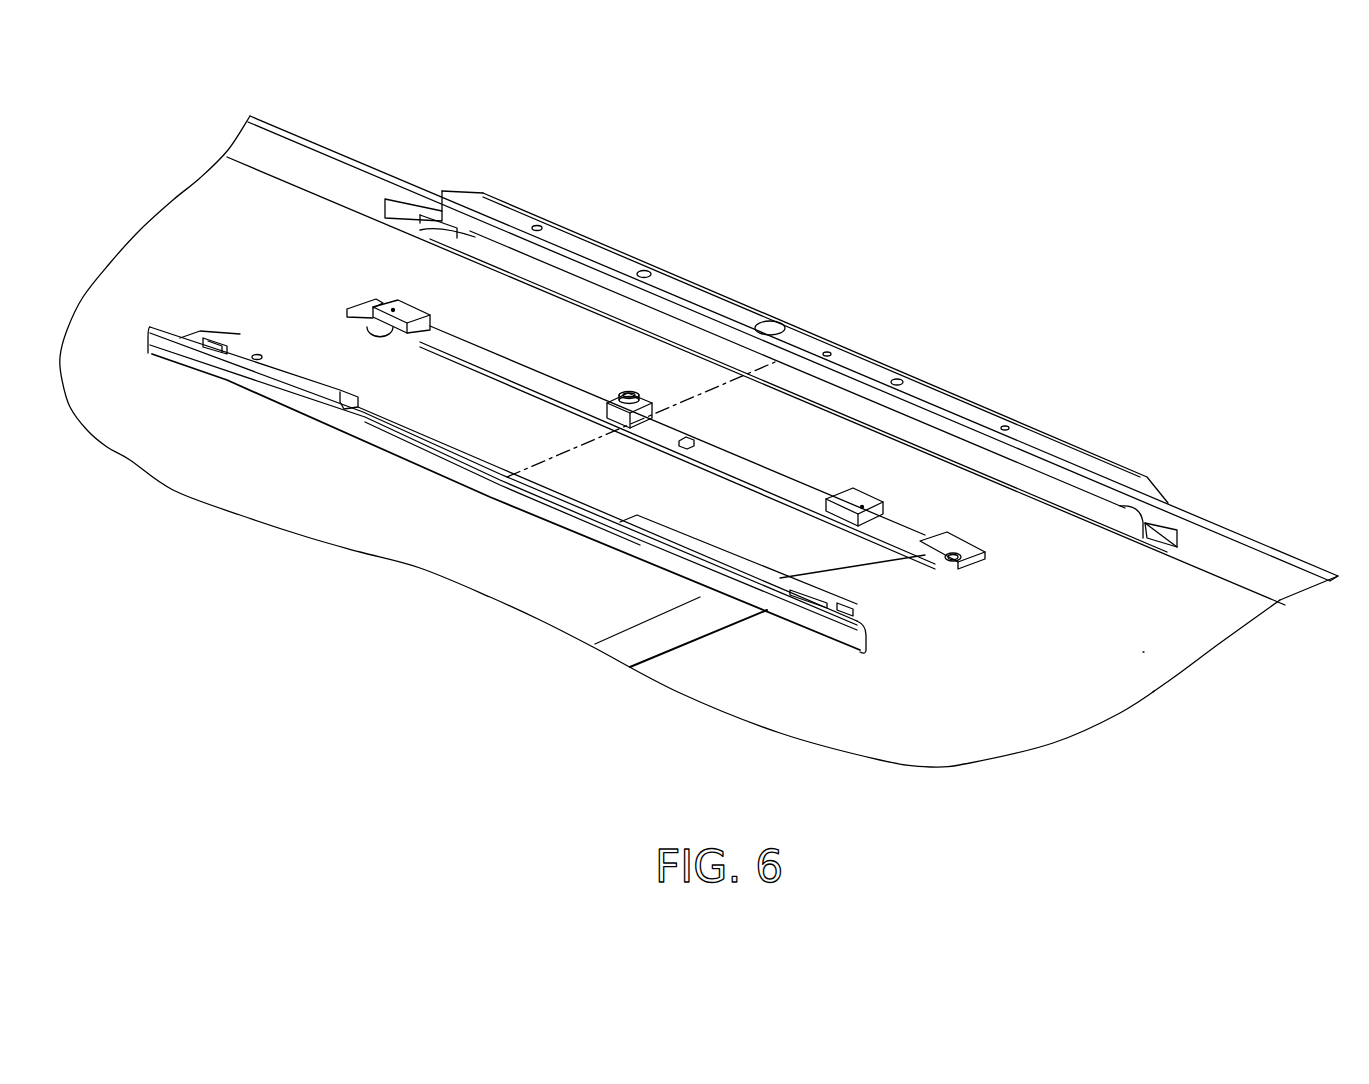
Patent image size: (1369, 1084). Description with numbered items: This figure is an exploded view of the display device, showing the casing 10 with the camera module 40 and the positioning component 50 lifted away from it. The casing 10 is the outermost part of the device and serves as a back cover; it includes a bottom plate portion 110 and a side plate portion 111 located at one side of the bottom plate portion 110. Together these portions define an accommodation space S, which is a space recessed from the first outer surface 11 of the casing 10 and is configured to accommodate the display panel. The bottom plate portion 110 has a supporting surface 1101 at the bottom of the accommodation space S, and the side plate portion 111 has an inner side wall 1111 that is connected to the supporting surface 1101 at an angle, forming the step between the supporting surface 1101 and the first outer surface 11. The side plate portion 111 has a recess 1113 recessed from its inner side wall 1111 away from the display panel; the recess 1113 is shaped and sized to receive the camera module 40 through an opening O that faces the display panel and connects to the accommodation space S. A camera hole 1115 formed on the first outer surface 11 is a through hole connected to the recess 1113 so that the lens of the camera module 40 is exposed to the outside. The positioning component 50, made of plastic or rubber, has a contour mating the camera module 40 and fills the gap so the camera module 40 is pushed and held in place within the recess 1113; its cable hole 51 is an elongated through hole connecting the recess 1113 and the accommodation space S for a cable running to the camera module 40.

The casing 10 is at (785, 360).
The first outer surface 11 is at (805, 347).
The side plate portion 111 is at (785, 360).
The inner side wall 1111 is at (1247, 565).
The recess 1113 is at (1045, 485).
The camera hole 1115 is at (772, 320).
The bottom plate portion 110 is at (1152, 690).
The supporting surface 1101 is at (1142, 652).
The accommodation space S is at (1210, 605).
The opening O is at (456, 254).
The camera module 40 is at (347, 300).
The positioning component 50 is at (558, 517).
The cable hole 51 is at (770, 615).